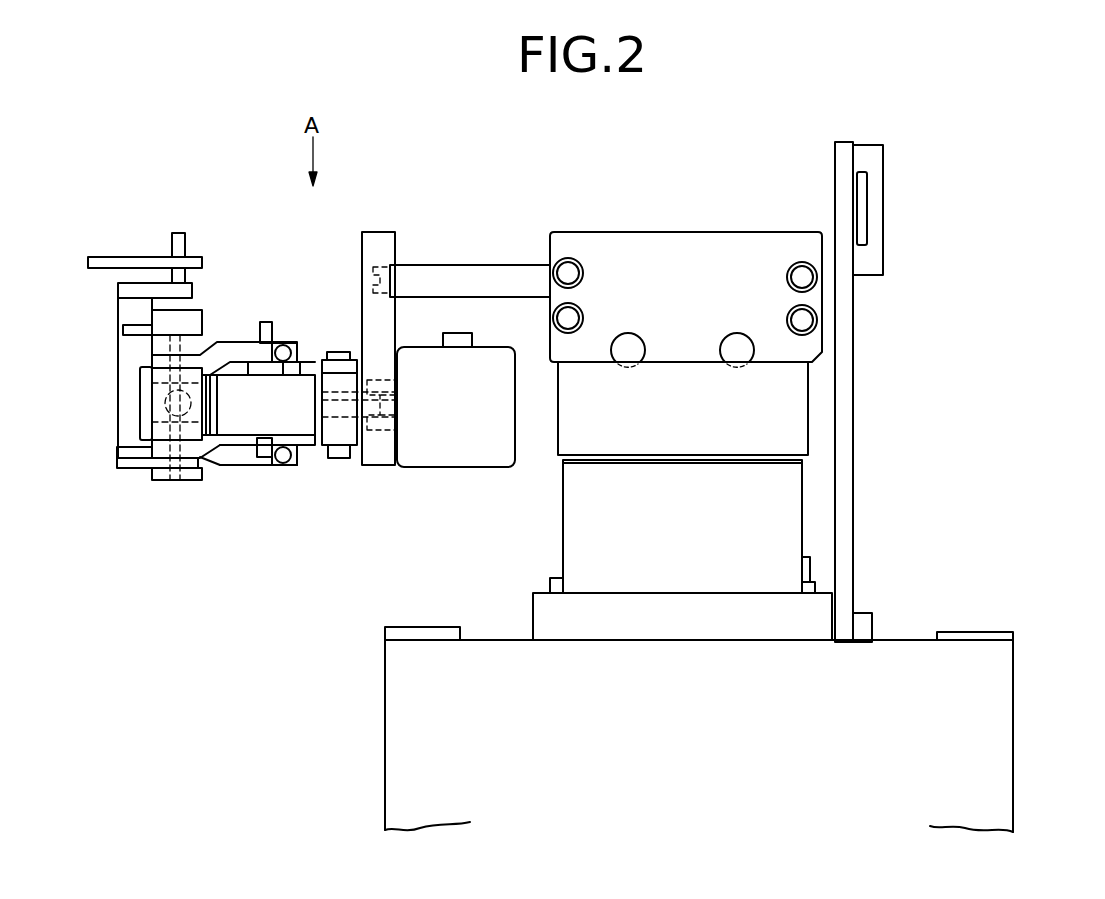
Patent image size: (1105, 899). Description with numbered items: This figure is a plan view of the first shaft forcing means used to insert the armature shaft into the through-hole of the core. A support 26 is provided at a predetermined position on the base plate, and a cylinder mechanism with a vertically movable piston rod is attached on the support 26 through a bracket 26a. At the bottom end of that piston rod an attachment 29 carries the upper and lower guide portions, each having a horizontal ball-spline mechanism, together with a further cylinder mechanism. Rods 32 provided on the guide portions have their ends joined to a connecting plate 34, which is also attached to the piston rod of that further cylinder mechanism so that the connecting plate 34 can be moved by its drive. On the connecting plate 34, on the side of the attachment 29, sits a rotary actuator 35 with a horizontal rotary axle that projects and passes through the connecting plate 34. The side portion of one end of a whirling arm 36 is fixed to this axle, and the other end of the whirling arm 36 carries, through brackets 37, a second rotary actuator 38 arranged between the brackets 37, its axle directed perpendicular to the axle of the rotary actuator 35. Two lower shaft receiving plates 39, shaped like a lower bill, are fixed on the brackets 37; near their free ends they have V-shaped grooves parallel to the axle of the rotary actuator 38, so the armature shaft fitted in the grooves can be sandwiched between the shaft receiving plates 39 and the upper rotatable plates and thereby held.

The support 26 is at (993, 718).
The bracket 26a is at (575, 515).
The attachment 29 is at (694, 255).
The rods 32 is at (500, 275).
The connecting plate 34 is at (386, 240).
The rotary actuator 35 is at (447, 445).
The whirling arm 36 is at (340, 427).
The brackets 37 is at (307, 360).
The rotary actuator 38 is at (237, 420).
The lower shaft receiving plates 39 is at (237, 347).